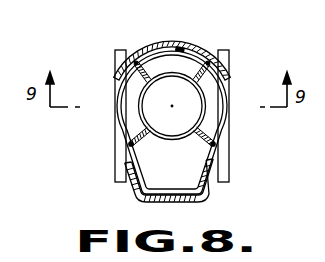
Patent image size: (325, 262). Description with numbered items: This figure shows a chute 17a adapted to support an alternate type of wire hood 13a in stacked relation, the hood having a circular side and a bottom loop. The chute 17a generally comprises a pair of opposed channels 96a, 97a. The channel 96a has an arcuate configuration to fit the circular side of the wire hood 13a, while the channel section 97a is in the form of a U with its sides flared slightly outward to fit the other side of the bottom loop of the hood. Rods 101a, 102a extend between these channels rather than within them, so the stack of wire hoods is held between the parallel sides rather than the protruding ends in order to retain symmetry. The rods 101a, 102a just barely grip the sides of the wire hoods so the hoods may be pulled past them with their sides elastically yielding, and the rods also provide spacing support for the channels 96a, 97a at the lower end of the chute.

The wire hood 13a is at (117, 112).
The chute 17a is at (114, 140).
The channel 96a is at (207, 46).
The channel section 97a is at (203, 200).
The rod 101a is at (117, 173).
The rod 102a is at (229, 163).